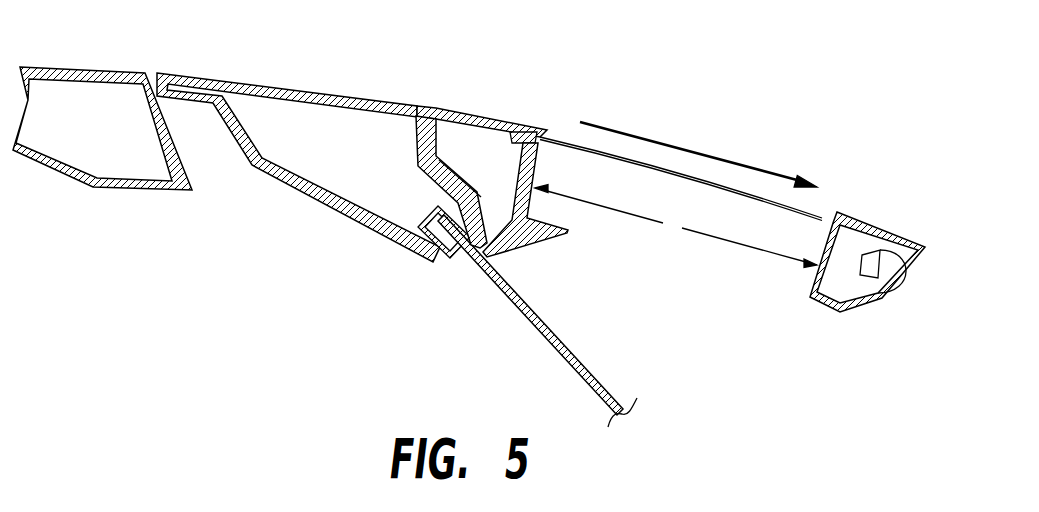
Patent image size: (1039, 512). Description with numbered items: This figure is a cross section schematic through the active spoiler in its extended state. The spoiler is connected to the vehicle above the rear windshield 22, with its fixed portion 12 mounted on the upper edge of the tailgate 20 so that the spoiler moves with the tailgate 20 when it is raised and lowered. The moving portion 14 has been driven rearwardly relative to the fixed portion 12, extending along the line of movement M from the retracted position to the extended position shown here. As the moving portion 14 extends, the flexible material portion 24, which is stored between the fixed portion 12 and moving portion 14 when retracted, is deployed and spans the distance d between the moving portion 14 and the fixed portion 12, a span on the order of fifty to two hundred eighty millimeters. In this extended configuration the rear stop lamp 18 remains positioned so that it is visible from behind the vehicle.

The fixed portion 12 is at (477, 116).
The moving portion 14 is at (877, 228).
The rear stop lamp 18 is at (902, 273).
The tailgate 20 is at (296, 84).
The rear windshield 22 is at (568, 348).
The flexible portion 24 is at (708, 186).
The line of movement M is at (707, 156).
The distance d is at (676, 226).